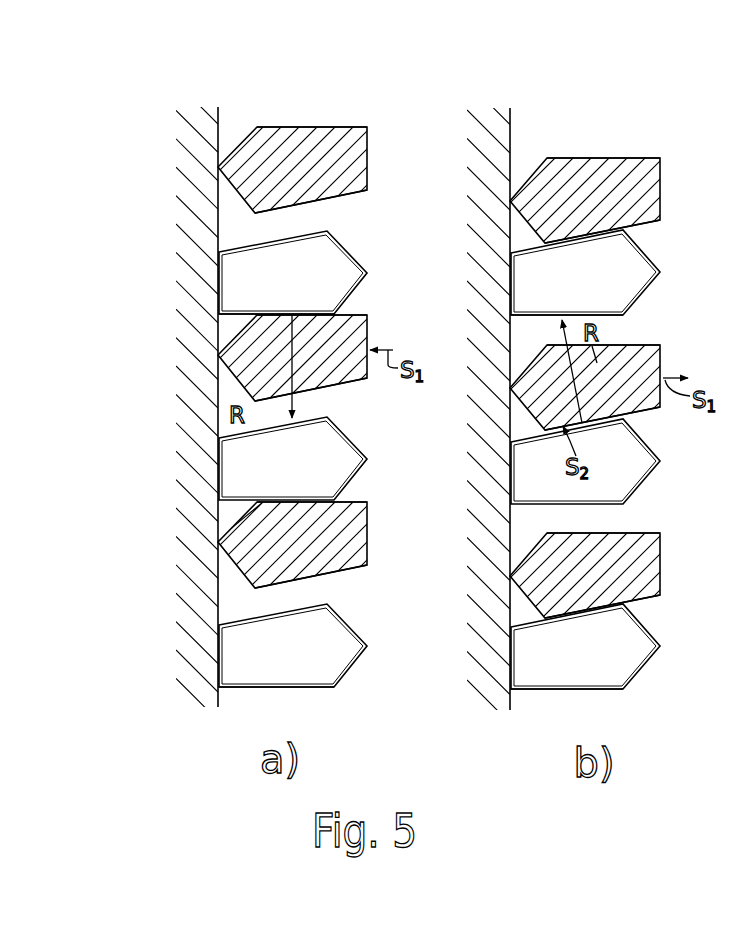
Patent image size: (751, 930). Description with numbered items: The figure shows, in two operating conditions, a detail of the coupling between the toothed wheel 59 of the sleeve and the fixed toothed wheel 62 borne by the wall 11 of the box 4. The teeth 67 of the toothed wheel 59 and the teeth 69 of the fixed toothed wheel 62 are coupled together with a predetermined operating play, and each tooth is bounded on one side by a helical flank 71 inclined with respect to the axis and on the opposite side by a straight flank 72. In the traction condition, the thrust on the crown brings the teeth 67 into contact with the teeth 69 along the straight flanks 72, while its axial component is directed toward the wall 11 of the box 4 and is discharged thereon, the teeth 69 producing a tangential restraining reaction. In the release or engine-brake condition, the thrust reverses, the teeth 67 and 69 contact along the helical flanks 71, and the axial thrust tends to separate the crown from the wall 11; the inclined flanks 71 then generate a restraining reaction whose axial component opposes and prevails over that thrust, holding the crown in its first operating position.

In FIG. 5a, the box 4 is at (194, 150).
In FIG. 5b, the box 4 is at (479, 169).
In FIG. 5a, the wall 11 is at (199, 131).
In FIG. 5b, the wall 11 is at (490, 125).
In FIG. 5a, the toothed wheel 59 is at (310, 142).
In FIG. 5b, the toothed wheel 59 is at (615, 178).
In FIG. 5a, the fixed toothed wheel 62 is at (234, 268).
In FIG. 5b, the fixed toothed wheel 62 is at (623, 254).
In FIG. 5a, the teeth 67 is at (280, 137).
In FIG. 5b, the teeth 67 is at (592, 172).
In FIG. 5a, the teeth 69 is at (228, 294).
In FIG. 5b, the teeth 69 is at (635, 264).
In FIG. 5a, the helical flank 71 is at (314, 228).
In FIG. 5b, the helical flank 71 is at (606, 227).
In FIG. 5a, the straight flank 72 is at (344, 126).
In FIG. 5b, the straight flank 72 is at (641, 155).